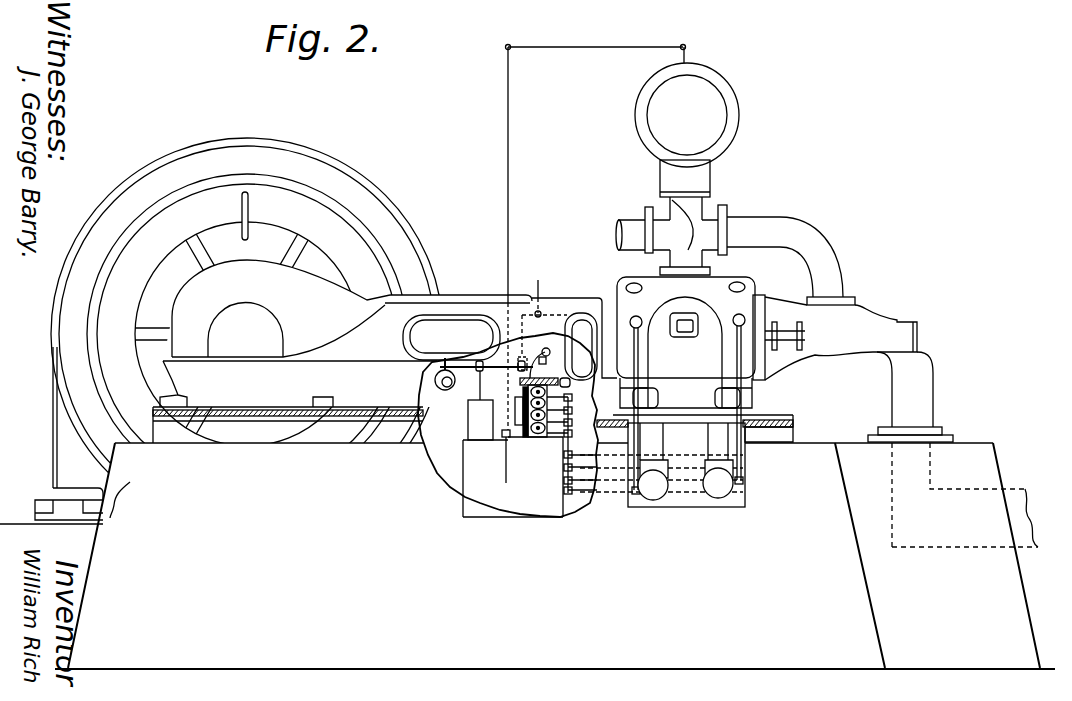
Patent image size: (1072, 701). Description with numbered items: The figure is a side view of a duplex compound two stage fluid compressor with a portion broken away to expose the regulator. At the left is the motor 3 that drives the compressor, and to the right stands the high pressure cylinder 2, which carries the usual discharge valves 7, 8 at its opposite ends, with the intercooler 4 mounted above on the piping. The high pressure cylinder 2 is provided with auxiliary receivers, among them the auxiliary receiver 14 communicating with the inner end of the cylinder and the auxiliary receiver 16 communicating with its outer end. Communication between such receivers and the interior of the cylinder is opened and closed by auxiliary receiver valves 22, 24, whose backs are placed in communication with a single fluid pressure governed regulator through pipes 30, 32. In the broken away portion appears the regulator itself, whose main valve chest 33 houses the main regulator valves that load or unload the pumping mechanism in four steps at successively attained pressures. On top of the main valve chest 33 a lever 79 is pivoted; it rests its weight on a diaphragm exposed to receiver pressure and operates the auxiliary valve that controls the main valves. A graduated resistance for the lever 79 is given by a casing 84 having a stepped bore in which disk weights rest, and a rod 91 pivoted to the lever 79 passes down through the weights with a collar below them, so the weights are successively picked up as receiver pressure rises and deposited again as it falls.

The high pressure cylinder 2 is at (737, 284).
The motor 3 is at (247, 334).
The intercooler 4 is at (687, 130).
The discharge valve 7 is at (634, 283).
The discharge valve 8 is at (742, 316).
The auxiliary receiver 14 is at (651, 494).
The auxiliary receiver 16 is at (720, 496).
The auxiliary receiver valve 22 is at (632, 318).
The auxiliary receiver valve 24 is at (752, 306).
The pipe 30 is at (633, 380).
The pipe 32 is at (736, 353).
The main valve chest 33 is at (538, 436).
The lever 79 is at (468, 369).
The casing 84 is at (479, 420).
The rod 91 is at (483, 373).